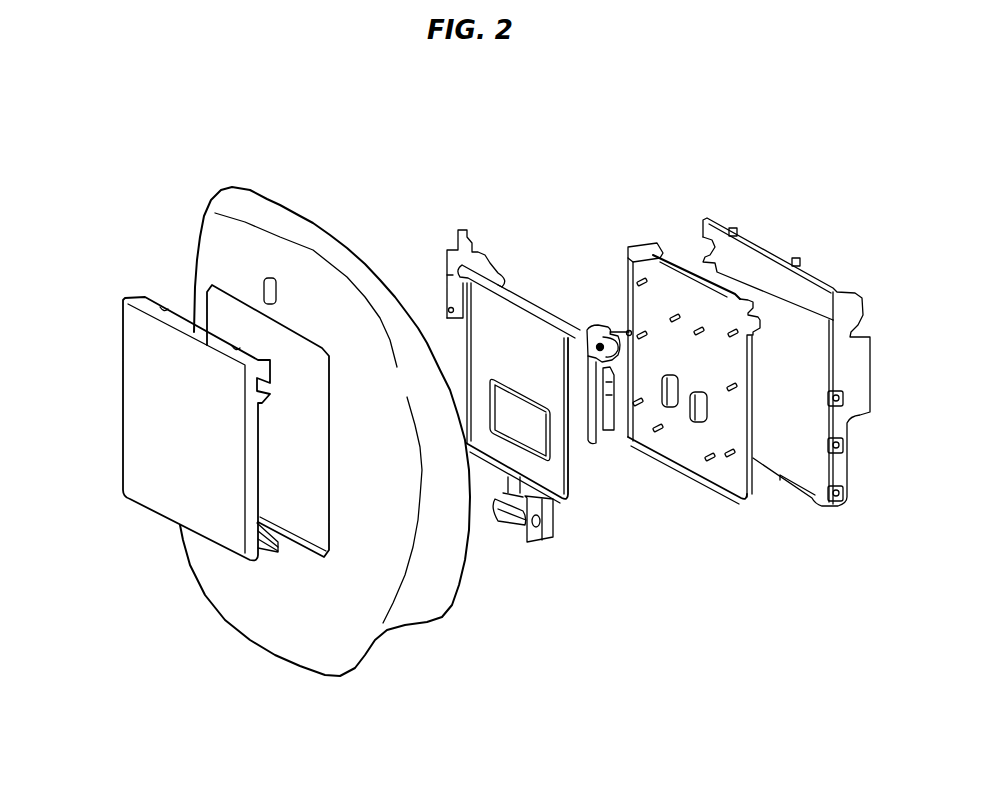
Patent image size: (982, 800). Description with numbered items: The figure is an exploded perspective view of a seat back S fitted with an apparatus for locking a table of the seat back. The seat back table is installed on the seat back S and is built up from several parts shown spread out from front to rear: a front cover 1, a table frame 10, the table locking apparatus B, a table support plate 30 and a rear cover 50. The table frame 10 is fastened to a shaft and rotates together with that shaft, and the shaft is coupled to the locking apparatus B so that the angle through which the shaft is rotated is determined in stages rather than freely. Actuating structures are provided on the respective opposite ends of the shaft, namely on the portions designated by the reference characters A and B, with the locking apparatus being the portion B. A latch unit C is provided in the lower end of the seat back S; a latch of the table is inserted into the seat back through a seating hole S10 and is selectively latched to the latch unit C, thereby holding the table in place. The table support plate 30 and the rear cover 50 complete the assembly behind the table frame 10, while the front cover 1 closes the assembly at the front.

The front cover 1 is at (155, 432).
The seat back S is at (315, 615).
The seating hole S10 is at (262, 553).
The actuating structure portion A is at (452, 219).
The table frame 10 is at (508, 317).
The table locking apparatus B is at (595, 317).
The latch unit C is at (559, 536).
The table support plate 30 is at (642, 244).
The rear cover 50 is at (740, 270).